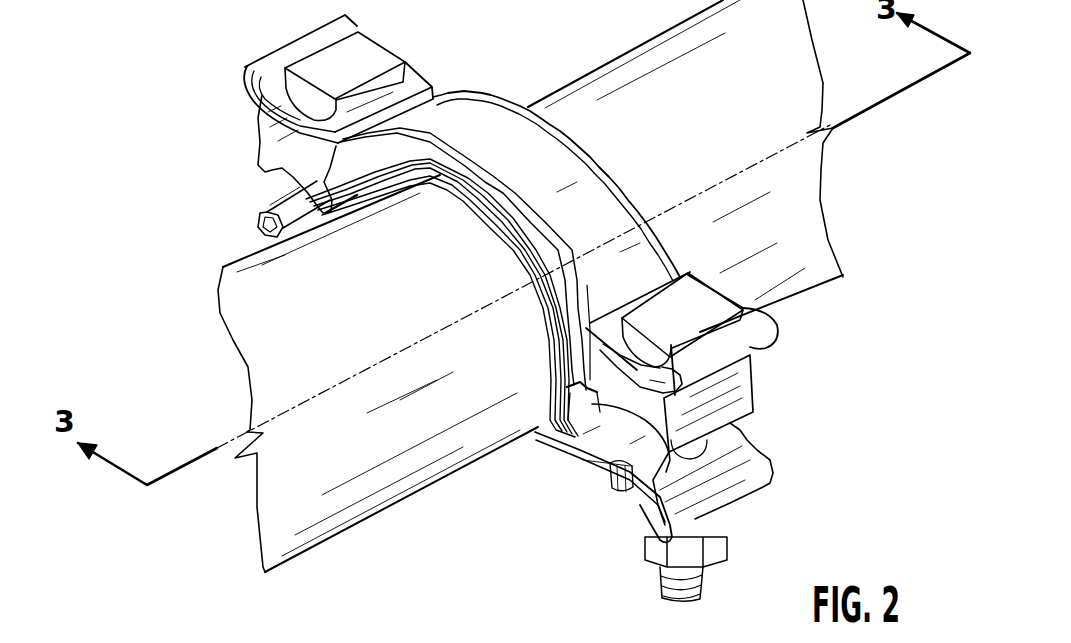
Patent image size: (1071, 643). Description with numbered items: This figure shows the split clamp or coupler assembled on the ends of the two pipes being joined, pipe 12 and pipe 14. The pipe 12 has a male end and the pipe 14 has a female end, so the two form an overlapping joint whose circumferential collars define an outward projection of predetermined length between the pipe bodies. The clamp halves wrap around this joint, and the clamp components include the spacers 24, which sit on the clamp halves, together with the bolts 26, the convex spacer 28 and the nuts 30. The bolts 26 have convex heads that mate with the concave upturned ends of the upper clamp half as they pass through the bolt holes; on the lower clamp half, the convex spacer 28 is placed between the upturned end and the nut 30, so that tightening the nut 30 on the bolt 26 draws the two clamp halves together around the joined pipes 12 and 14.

The pipe 12 is at (733, 143).
The pipe 14 is at (411, 309).
The spacer 24 is at (272, 130).
The bolt 26 is at (372, 55).
The convex spacer 28 is at (630, 480).
The nut 30 is at (735, 540).